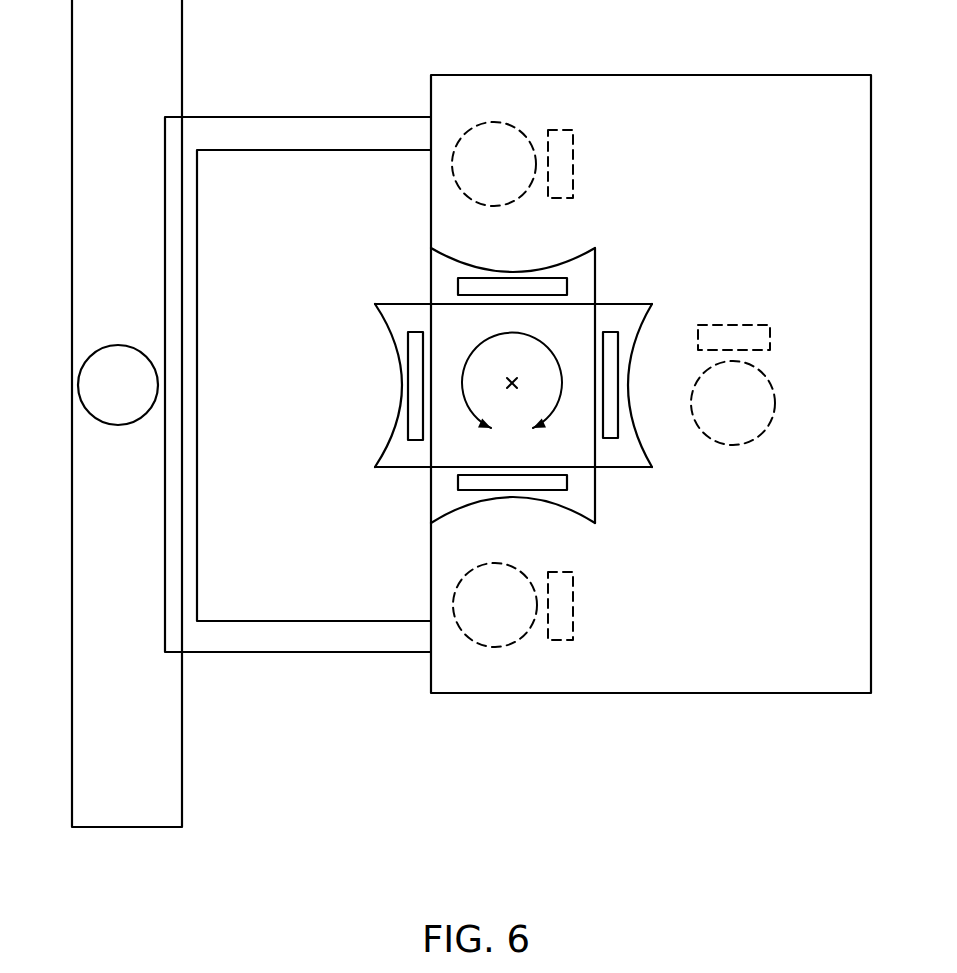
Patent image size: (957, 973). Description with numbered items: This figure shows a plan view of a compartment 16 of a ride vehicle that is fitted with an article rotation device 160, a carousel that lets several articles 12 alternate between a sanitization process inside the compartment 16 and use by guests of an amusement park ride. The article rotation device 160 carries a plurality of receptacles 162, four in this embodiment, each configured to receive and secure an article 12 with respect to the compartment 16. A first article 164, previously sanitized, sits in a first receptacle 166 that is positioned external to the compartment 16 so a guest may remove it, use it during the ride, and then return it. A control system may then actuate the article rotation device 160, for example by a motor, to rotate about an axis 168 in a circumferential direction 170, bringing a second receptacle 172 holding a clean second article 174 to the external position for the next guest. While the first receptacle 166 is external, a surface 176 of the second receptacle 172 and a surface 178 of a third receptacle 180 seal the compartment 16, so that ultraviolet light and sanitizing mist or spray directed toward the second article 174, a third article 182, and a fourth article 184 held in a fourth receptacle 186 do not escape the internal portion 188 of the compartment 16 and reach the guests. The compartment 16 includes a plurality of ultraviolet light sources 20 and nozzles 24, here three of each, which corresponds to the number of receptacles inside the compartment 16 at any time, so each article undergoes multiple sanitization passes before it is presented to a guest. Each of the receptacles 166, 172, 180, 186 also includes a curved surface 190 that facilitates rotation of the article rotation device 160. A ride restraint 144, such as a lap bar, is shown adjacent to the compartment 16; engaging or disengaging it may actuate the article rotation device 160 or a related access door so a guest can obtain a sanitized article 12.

The article 12 is at (545, 286).
The compartment 16 is at (745, 75).
The ultraviolet light source 20 is at (472, 123).
The nozzle 24 is at (576, 141).
The ride restraint 144 is at (325, 645).
The article rotation device 160 is at (623, 298).
The receptacle 162 is at (587, 273).
The first article 164 is at (412, 410).
The first receptacle 166 is at (402, 457).
The axis 168 is at (514, 388).
The circumferential direction 170 is at (510, 334).
The second receptacle 172 is at (587, 488).
The second article 174 is at (548, 486).
The surface of second receptacle 176 is at (428, 504).
The surface of third receptacle 178 is at (425, 277).
The third receptacle 180 is at (442, 263).
The third article 182 is at (478, 286).
The fourth article 184 is at (613, 433).
The fourth receptacle 186 is at (623, 460).
The internal portion of compartment 188 is at (737, 619).
The curved surface 190 is at (514, 268).